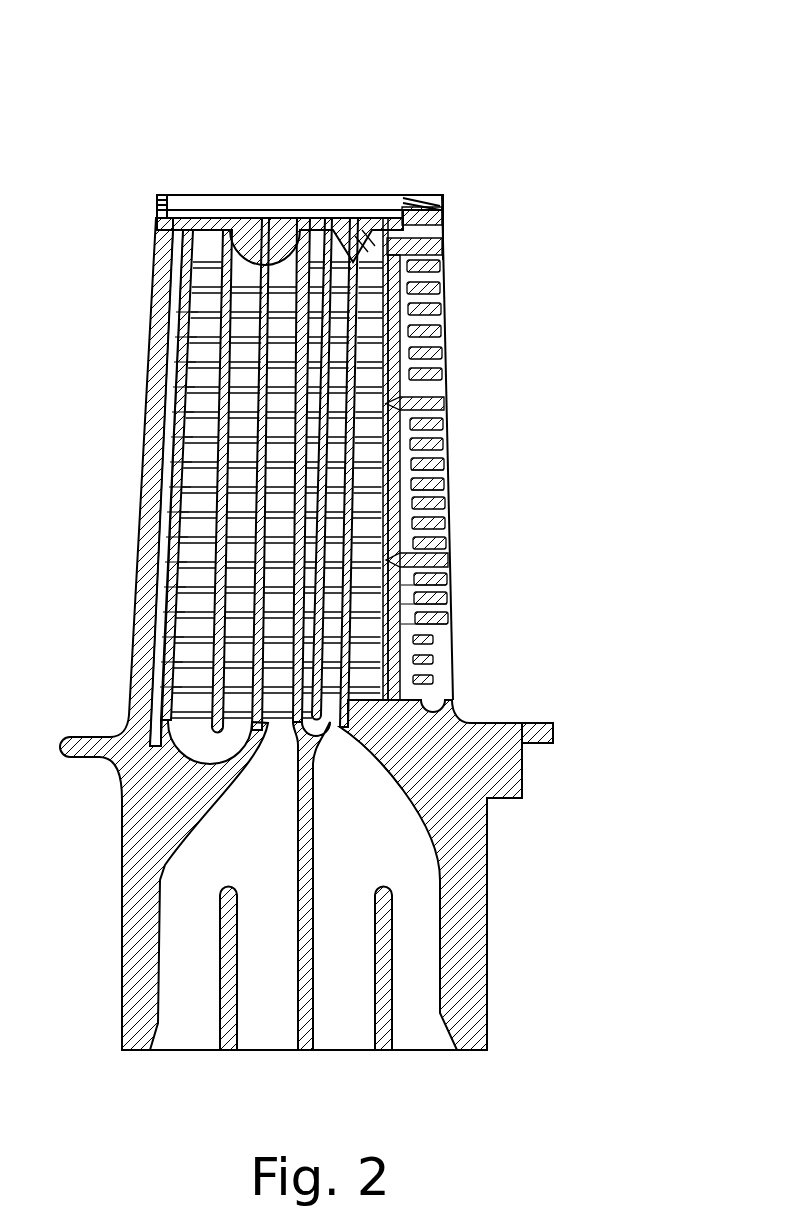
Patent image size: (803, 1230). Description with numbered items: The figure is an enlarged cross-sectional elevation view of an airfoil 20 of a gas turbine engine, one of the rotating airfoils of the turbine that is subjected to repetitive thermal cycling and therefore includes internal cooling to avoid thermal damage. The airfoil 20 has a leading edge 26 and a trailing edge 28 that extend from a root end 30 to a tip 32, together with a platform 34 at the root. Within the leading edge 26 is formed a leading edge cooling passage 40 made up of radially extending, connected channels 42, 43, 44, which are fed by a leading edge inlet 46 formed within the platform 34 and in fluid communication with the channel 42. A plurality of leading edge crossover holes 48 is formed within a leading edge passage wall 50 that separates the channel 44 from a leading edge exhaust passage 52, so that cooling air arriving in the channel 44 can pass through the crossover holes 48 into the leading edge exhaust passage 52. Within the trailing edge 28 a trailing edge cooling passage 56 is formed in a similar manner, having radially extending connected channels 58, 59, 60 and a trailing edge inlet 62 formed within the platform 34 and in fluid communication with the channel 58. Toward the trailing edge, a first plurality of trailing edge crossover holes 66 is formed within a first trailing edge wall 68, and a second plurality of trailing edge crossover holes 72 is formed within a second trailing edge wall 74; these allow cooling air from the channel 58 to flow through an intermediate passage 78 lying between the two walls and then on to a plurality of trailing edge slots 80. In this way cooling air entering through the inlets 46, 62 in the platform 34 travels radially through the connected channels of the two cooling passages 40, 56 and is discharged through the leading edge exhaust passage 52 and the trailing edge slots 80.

The airfoil 20 is at (548, 107).
The leading edge 26 is at (153, 268).
The trailing edge 28 is at (448, 362).
The root end 30 is at (470, 722).
The tip 32 is at (435, 195).
The platform 34 is at (553, 735).
The leading edge cooling passage 40 is at (210, 240).
The channel 42 is at (287, 257).
The channel 43 is at (240, 257).
The channel 44 is at (205, 686).
The leading edge inlet 46 is at (283, 792).
The leading edge crossover holes 48 is at (175, 585).
The leading edge passage wall 50 is at (178, 458).
The leading edge exhaust passage 52 is at (172, 372).
The trailing edge cooling passage 56 is at (348, 258).
The channel 58 is at (378, 679).
The channel 59 is at (332, 713).
The channel 60 is at (307, 720).
The trailing edge inlet 62 is at (365, 792).
The first plurality of trailing edge crossover holes 66 is at (413, 655).
The first trailing edge wall 68 is at (385, 663).
The second plurality of trailing edge crossover holes 72 is at (413, 613).
The second trailing edge wall 74 is at (412, 585).
The intermediate passage 78 is at (420, 558).
The trailing edge slots 80 is at (428, 481).